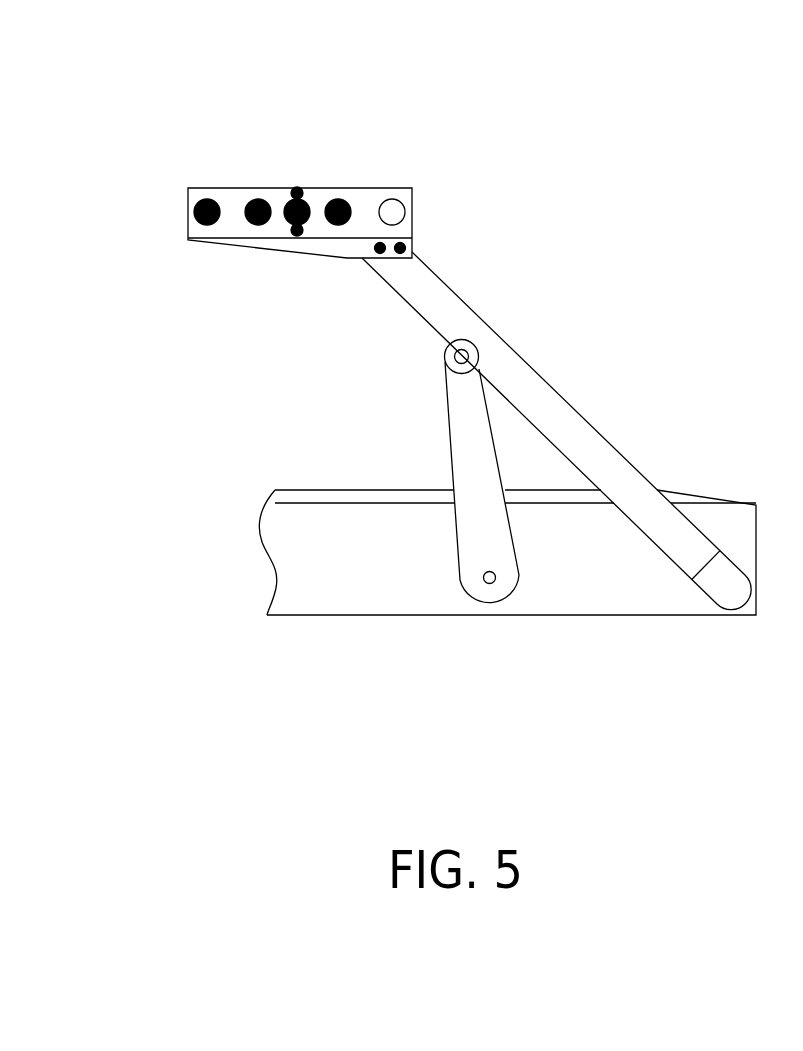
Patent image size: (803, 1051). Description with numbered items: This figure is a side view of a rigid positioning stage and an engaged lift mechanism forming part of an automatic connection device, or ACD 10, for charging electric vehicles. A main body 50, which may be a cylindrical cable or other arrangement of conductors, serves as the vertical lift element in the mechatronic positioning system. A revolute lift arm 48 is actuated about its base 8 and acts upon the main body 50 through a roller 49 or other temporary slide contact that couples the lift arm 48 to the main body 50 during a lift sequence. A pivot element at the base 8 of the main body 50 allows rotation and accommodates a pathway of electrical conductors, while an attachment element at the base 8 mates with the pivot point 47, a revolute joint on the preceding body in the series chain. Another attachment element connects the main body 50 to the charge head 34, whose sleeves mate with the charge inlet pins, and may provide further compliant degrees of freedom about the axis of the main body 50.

The ACD 10 is at (178, 99).
The charge head 34 is at (366, 188).
The main body 50 is at (561, 394).
The roller 49 is at (457, 363).
The lift arm 48 is at (455, 527).
The pivot point 47 is at (488, 584).
The base 8 is at (595, 596).